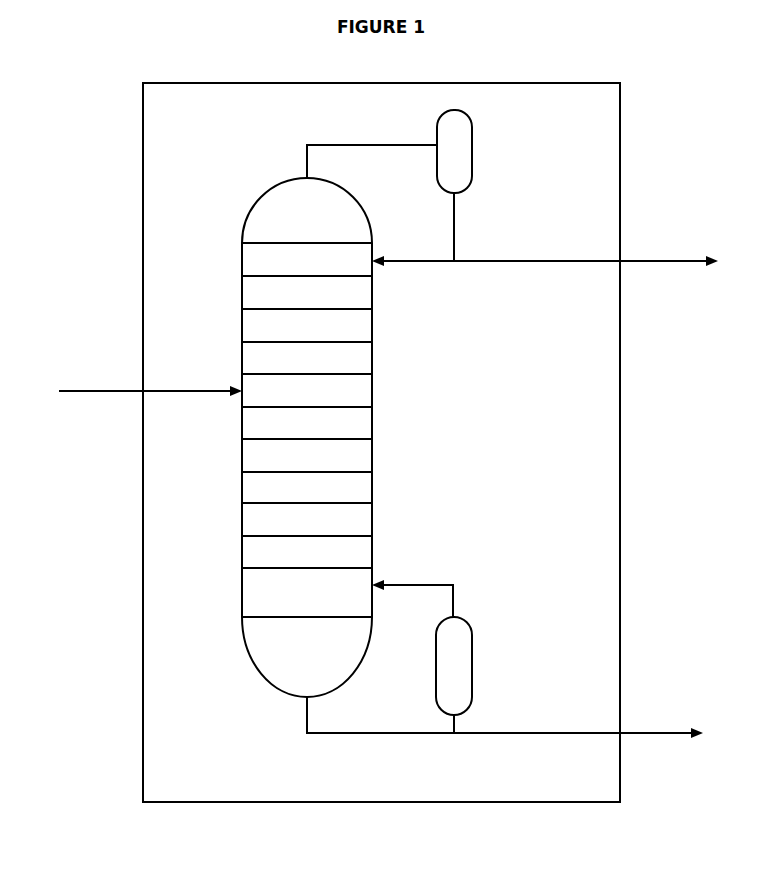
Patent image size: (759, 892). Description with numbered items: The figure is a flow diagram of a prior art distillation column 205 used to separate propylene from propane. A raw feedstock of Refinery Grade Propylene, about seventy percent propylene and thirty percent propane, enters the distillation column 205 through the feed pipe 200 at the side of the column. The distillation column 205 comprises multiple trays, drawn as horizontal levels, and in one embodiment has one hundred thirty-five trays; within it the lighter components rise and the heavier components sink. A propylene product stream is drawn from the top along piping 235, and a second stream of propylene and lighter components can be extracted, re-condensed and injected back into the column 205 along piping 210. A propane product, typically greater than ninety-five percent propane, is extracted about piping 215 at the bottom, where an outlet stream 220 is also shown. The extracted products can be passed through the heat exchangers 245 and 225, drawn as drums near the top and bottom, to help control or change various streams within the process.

The feed pipe 200 is at (176, 400).
The distillation column 205 is at (275, 391).
The piping 210 is at (404, 576).
The piping 215 is at (372, 756).
The bottoms product stream 220 is at (669, 742).
The heat exchanger 225 is at (453, 667).
The piping 235 is at (668, 270).
The heat exchanger 245 is at (453, 132).